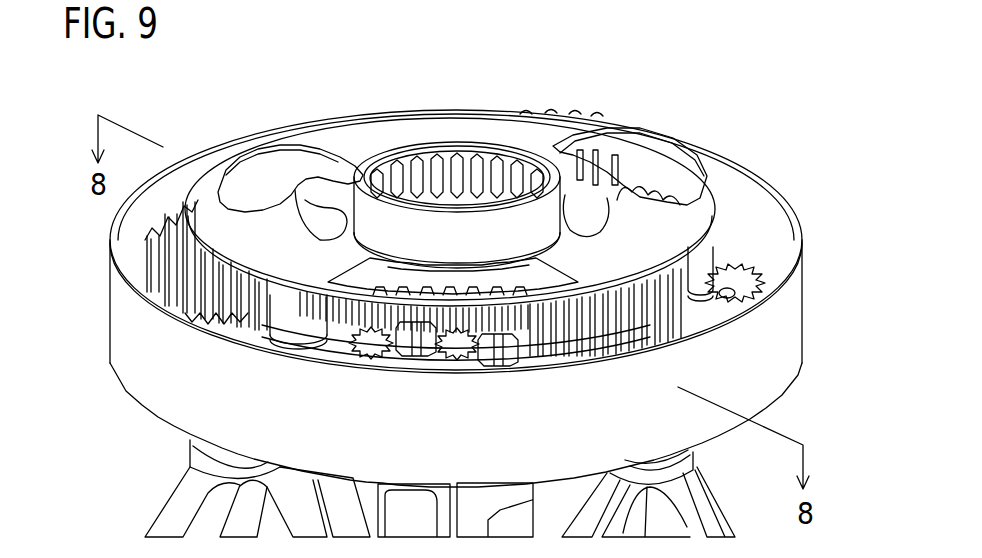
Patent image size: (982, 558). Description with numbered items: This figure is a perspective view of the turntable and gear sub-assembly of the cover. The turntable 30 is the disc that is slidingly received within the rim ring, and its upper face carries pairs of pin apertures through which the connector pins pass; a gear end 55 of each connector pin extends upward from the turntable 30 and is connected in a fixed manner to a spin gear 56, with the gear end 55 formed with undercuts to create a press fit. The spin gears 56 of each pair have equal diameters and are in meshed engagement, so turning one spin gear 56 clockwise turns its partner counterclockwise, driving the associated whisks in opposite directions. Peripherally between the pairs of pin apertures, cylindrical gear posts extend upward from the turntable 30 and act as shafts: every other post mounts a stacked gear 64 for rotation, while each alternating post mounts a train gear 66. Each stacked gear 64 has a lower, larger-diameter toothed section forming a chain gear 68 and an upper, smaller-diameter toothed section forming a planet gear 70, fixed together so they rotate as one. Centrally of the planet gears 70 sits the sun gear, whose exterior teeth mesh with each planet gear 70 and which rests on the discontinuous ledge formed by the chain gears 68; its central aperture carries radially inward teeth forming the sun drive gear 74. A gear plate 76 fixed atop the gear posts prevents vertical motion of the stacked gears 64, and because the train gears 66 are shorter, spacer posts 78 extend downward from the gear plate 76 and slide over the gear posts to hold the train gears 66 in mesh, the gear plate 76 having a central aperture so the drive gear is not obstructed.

The turntable 30 is at (760, 184).
The gear end 55 is at (648, 210).
The spin gear 56 is at (443, 347).
The stacked gear 64 is at (573, 112).
The train gear 66 is at (723, 282).
The chain gear 68 is at (200, 317).
The planet gear 70 is at (173, 233).
The sun drive gear 74 is at (447, 160).
The gear plate 76 is at (385, 135).
The spacer post 78 is at (300, 317).